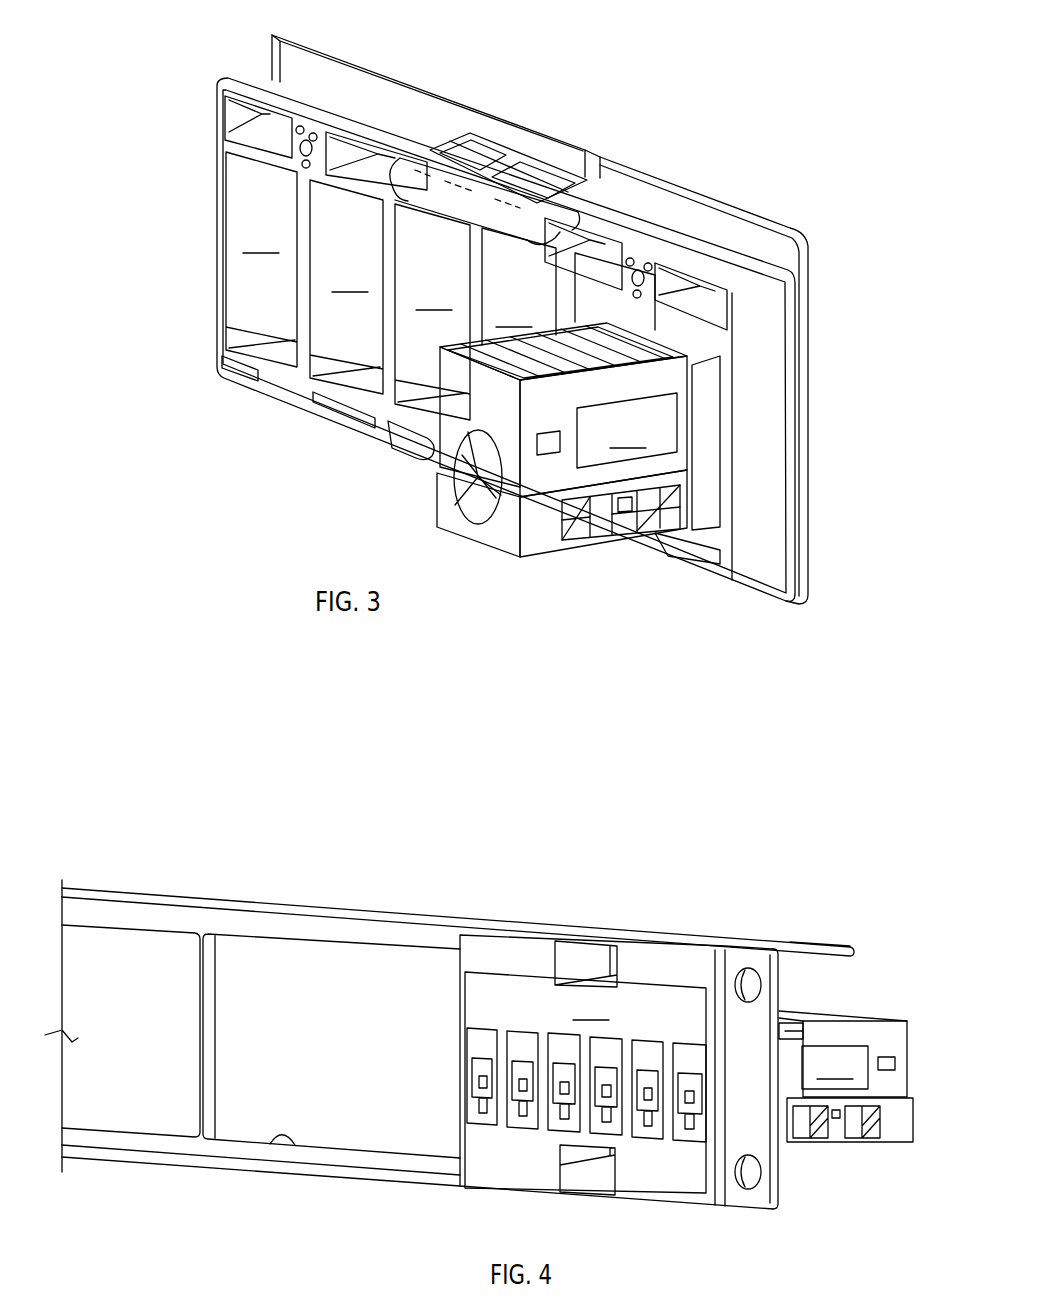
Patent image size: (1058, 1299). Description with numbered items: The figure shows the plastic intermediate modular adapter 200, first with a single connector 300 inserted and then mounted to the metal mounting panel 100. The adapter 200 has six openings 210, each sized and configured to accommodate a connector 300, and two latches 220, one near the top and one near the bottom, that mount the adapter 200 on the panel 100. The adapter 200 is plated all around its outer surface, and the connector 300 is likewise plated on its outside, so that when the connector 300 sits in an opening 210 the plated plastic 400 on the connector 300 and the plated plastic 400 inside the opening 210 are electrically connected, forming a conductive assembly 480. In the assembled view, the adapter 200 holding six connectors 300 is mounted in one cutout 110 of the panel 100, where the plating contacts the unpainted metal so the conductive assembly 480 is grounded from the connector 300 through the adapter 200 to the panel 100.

In FIG. 4, the metal mounting panel 100 is at (403, 908).
In FIG. 4, the large cutout 110 is at (281, 1137).
In FIG. 3, the plastic intermediate modular adapter 200 is at (712, 192).
In FIG. 4, the plastic intermediate modular adapter 200 is at (653, 951).
In FIG. 3, the opening 210 is at (567, 307).
In FIG. 3, the latch 220 is at (528, 117).
In FIG. 4, the latch 220 is at (584, 940).
In FIG. 3, the connector 300 is at (549, 558).
In FIG. 4, the connector 300 is at (879, 1018).
In FIG. 3, the plated plastic 400 is at (600, 318).
In FIG. 4, the plated plastic 400 is at (667, 1069).
In FIG. 3, the conductive assembly 480 is at (745, 66).
In FIG. 4, the conductive assembly 480 is at (808, 919).